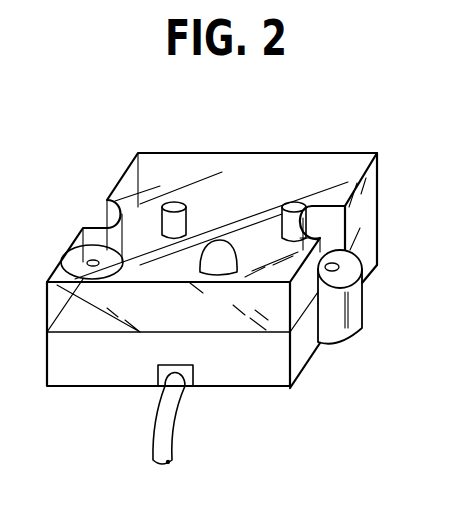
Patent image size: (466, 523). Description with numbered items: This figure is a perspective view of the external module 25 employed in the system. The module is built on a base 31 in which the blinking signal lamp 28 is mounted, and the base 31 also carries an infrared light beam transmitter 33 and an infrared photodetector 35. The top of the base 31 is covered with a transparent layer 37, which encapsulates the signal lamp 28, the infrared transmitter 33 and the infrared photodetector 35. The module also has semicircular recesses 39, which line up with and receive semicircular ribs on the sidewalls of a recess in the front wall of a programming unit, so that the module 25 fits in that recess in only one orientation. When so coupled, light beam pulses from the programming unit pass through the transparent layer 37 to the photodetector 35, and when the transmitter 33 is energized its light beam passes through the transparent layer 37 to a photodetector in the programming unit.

The external module 25 is at (200, 152).
The blinking signal lamp 28 is at (223, 253).
The base 31 is at (100, 378).
The infrared light beam transmitter 33 is at (177, 203).
The infrared photodetector 35 is at (295, 203).
The transparent layer 37 is at (47, 303).
The semicircular recesses 39 is at (105, 215).